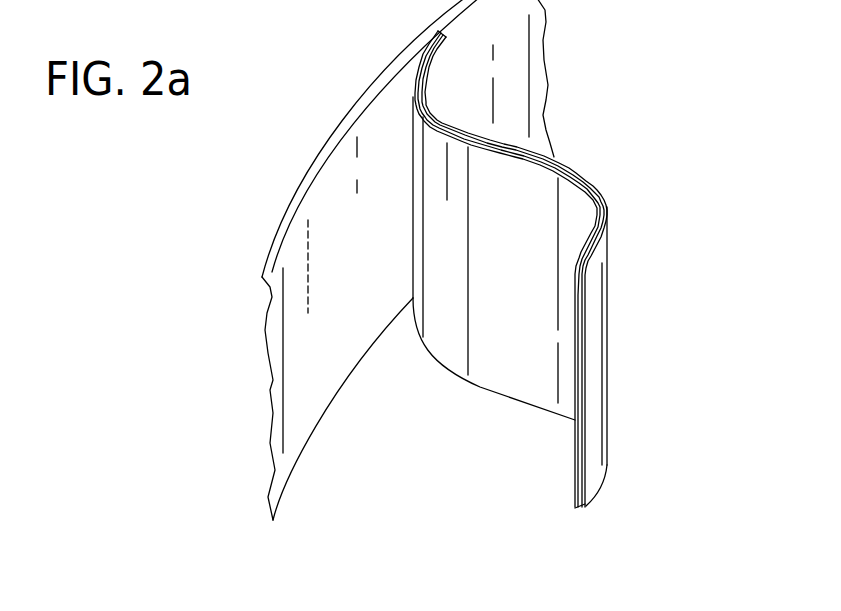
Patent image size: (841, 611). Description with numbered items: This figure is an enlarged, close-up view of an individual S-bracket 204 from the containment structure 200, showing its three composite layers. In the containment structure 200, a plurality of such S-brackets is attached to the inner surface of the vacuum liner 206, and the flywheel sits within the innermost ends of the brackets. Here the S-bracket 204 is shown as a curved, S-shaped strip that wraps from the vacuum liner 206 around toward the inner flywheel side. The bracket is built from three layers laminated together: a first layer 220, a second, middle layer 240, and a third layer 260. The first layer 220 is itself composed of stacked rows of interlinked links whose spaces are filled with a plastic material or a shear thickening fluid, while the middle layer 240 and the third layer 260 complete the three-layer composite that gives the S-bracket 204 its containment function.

The containment structure 200 is at (305, 50).
The S-bracket 204 is at (600, 188).
The vacuum liner 206 is at (292, 205).
The first layer 220 is at (575, 480).
The second (middle) layer 240 is at (576, 509).
The third layer 260 is at (597, 487).